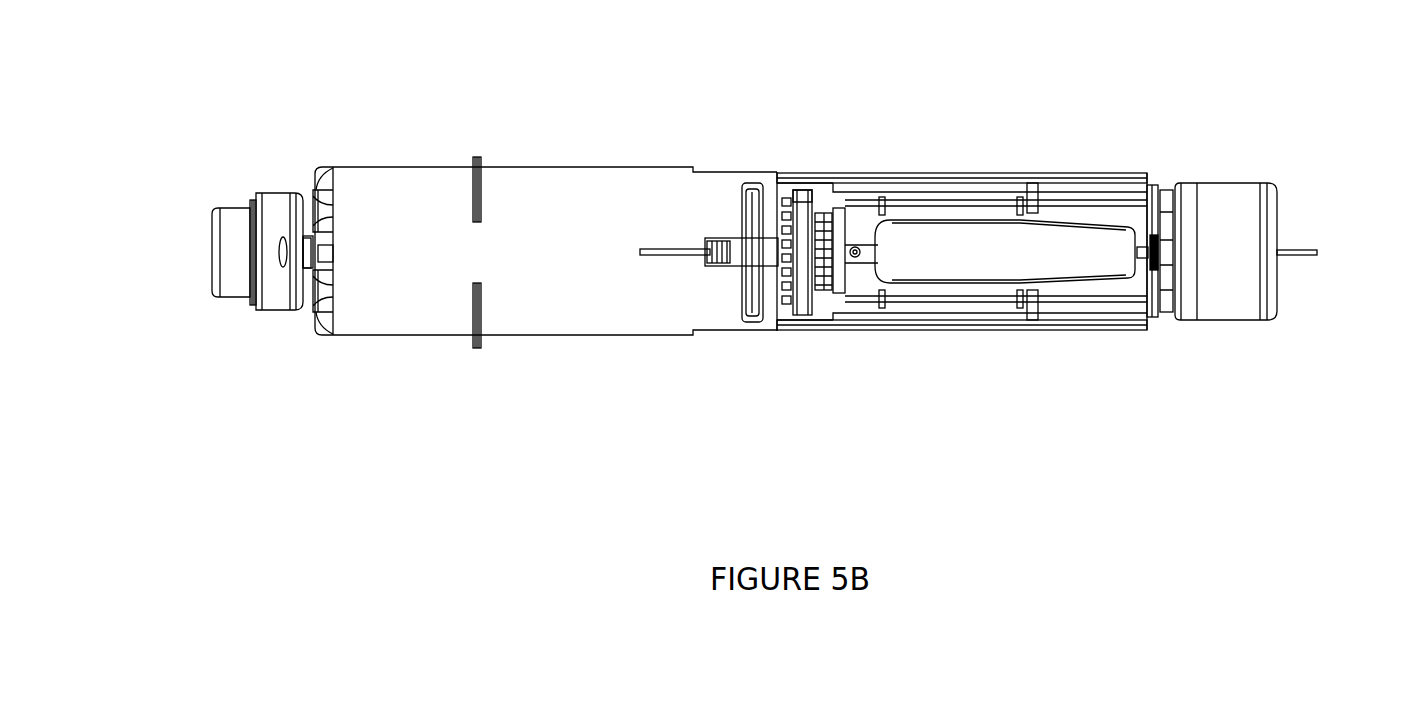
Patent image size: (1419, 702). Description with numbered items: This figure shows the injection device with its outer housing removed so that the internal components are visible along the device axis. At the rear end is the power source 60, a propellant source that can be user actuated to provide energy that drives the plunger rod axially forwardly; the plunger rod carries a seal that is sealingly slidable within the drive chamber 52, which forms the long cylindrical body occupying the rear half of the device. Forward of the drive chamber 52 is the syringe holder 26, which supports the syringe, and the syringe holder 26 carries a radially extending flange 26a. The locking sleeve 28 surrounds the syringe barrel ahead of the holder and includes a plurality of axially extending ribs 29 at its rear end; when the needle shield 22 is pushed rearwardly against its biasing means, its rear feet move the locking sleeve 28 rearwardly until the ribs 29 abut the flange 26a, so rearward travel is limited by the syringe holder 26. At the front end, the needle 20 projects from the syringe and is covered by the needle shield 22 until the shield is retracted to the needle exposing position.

The needle 20 is at (1305, 258).
The needle shield 22 is at (1228, 308).
The syringe holder 26 is at (800, 308).
The radially extending flange 26a is at (800, 200).
The locking sleeve 28 is at (975, 194).
The axially extending ribs 29 is at (833, 200).
The drive chamber 52 is at (410, 315).
The power source 60 is at (231, 235).